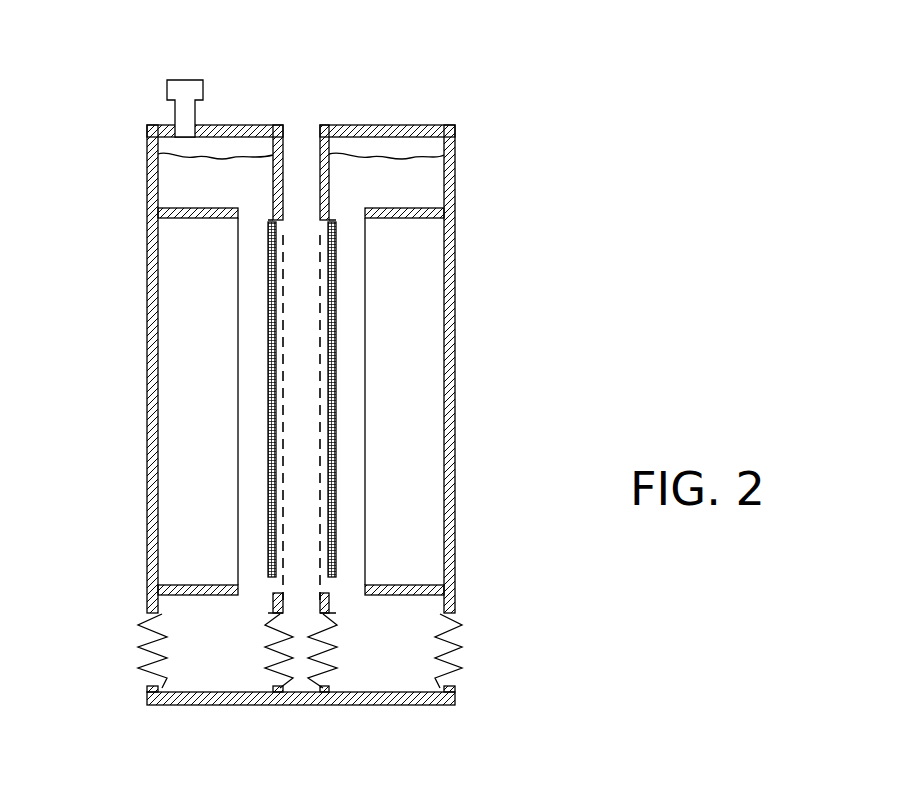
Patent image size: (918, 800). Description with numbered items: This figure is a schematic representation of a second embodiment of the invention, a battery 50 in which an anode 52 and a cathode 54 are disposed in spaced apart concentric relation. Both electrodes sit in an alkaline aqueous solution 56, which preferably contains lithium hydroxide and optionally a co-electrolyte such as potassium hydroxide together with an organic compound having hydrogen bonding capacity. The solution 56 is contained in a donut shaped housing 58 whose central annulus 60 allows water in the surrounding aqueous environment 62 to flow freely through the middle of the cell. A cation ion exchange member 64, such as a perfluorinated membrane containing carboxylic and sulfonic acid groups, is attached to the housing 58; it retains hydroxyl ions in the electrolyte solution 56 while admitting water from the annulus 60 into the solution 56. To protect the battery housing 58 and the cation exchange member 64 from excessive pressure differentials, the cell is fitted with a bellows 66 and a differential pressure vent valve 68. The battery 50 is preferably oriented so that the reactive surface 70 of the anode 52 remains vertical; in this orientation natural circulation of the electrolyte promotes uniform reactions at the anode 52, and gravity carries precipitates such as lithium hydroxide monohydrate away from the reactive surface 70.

The battery 50 is at (128, 349).
The anode 52 is at (188, 393).
The cathode 54 is at (270, 466).
The alkaline aqueous solution 56 is at (253, 515).
The donut shaped housing 58 is at (147, 585).
The annulus 60 is at (302, 662).
The aqueous environment 62 is at (426, 759).
The cation ion exchange member 64 is at (313, 407).
The bellows 66 is at (342, 664).
The differential pressure vent valve 68 is at (188, 92).
The reactive surface 70 is at (238, 290).